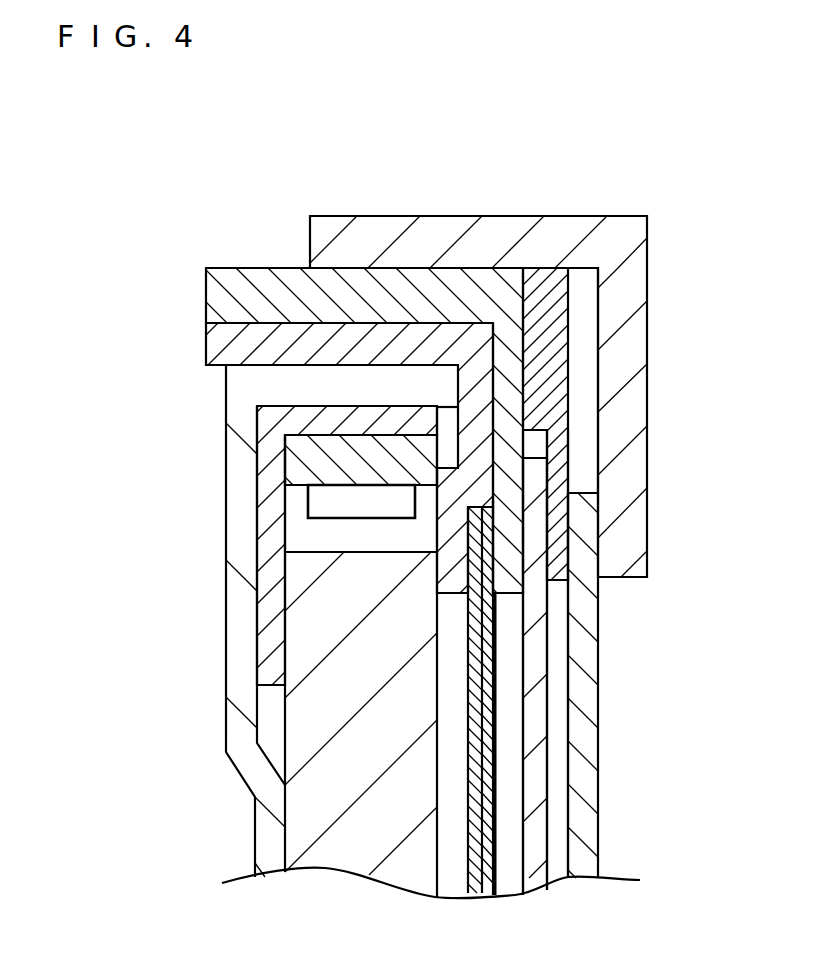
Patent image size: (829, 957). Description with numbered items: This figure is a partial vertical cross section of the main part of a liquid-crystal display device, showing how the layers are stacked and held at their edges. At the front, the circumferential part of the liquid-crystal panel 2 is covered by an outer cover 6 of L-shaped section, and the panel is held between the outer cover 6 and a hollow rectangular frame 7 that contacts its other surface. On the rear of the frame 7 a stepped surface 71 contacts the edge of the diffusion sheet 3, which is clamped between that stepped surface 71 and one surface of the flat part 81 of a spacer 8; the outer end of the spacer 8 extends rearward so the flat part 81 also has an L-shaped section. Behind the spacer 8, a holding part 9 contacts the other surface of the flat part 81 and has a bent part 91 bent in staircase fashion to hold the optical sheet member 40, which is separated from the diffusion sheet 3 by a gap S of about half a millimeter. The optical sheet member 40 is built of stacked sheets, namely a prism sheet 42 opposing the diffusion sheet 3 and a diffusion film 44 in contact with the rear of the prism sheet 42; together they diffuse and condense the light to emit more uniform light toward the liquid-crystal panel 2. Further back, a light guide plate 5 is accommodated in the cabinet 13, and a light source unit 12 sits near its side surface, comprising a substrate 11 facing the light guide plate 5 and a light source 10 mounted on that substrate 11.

The liquid-crystal panel 2 is at (582, 703).
The diffusion sheet 3 is at (537, 658).
The light guide plate 5 is at (315, 717).
The outer cover 6 is at (545, 228).
The frame 7 is at (560, 338).
The stepped surface 71 is at (560, 463).
The spacer 8 is at (258, 276).
The flat part 81 is at (513, 533).
The holding part 9 is at (215, 340).
The bent part 91 is at (453, 540).
The light source 10 is at (317, 506).
The substrate 11 is at (298, 472).
The light source unit 12 is at (258, 481).
The cabinet 13 is at (233, 665).
The optical sheet member 40 is at (612, 701).
The prism sheet 42 is at (490, 812).
The diffusion film 44 is at (475, 843).
The gap S is at (505, 742).